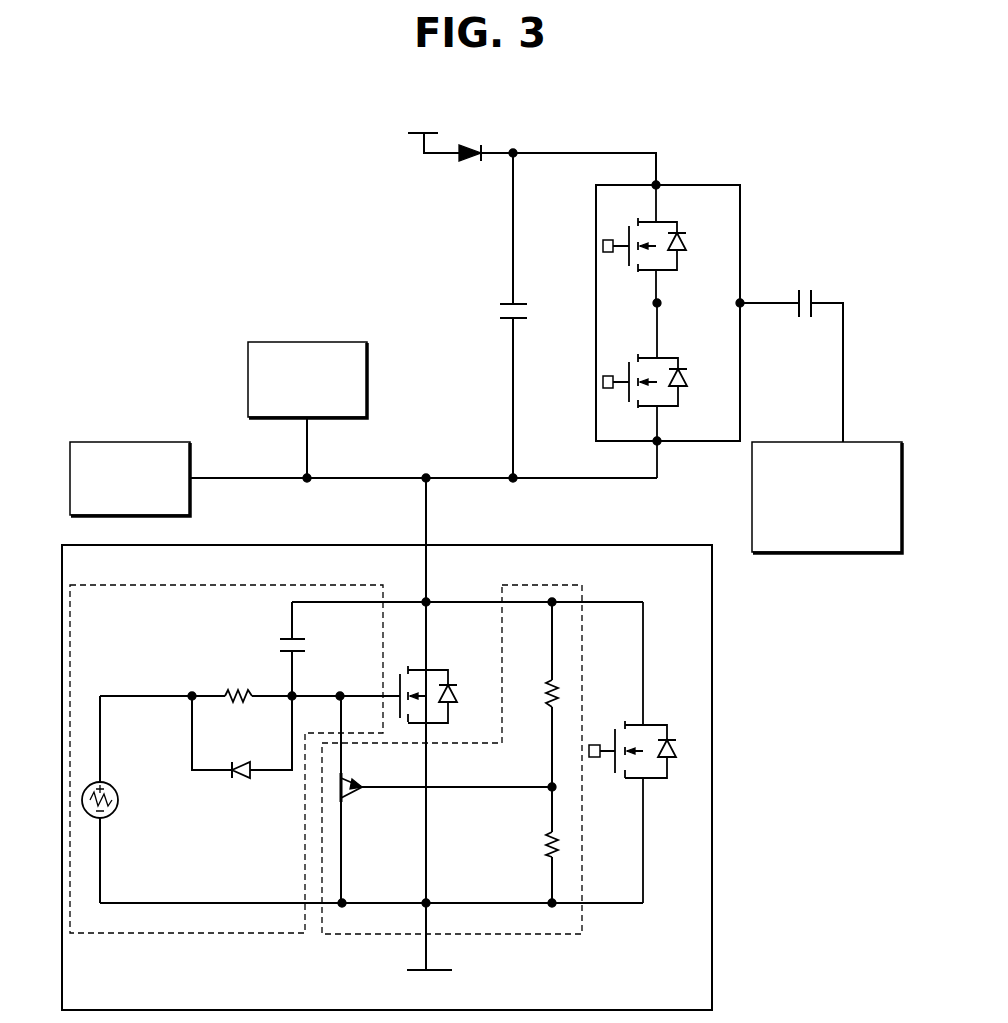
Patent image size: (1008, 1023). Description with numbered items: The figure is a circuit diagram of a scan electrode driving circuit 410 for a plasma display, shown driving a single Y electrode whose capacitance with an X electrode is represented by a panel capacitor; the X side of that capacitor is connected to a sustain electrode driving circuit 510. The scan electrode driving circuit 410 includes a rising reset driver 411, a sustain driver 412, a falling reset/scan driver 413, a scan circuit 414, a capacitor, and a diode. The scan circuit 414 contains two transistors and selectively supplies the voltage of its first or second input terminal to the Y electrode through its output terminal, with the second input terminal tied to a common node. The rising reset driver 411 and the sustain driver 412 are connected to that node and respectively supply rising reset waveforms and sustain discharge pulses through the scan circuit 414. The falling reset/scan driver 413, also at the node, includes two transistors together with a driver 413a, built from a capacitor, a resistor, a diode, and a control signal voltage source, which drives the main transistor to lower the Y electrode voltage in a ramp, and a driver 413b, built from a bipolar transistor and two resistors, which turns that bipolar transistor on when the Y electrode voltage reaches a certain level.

The scan electrode driving circuit 410 is at (265, 166).
The rising reset driver 411 is at (345, 342).
The sustain driver 412 is at (168, 442).
The falling reset/scan driver 413 is at (712, 622).
The driver 413a is at (311, 585).
The driver 413b is at (582, 597).
The scan circuit 414 is at (705, 185).
The sustain electrode driving circuit 510 is at (849, 555).